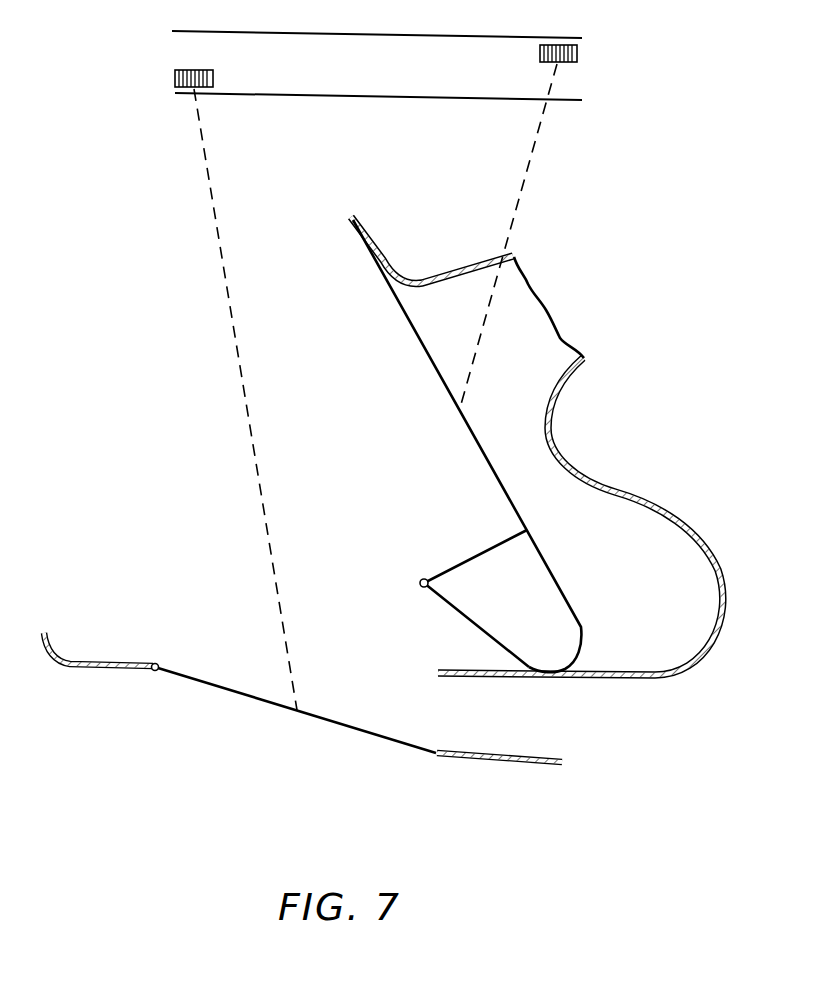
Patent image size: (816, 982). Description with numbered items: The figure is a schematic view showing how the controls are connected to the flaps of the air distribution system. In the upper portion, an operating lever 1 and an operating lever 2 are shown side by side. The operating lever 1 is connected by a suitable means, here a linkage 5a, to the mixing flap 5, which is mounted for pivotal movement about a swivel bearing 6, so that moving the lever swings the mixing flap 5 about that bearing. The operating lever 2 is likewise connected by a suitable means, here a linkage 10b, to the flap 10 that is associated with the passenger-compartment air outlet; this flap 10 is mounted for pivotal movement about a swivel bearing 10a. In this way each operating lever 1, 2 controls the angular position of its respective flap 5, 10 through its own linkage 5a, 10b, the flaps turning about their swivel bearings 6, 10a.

The operating lever 1 is at (580, 51).
The operating lever 2 is at (172, 78).
The mixing flap 5 is at (440, 390).
The linkage 5a is at (512, 193).
The swivel bearing 6 is at (420, 578).
The flap 10 is at (347, 726).
The swivel bearing 10a is at (153, 662).
The linkage 10b is at (228, 326).